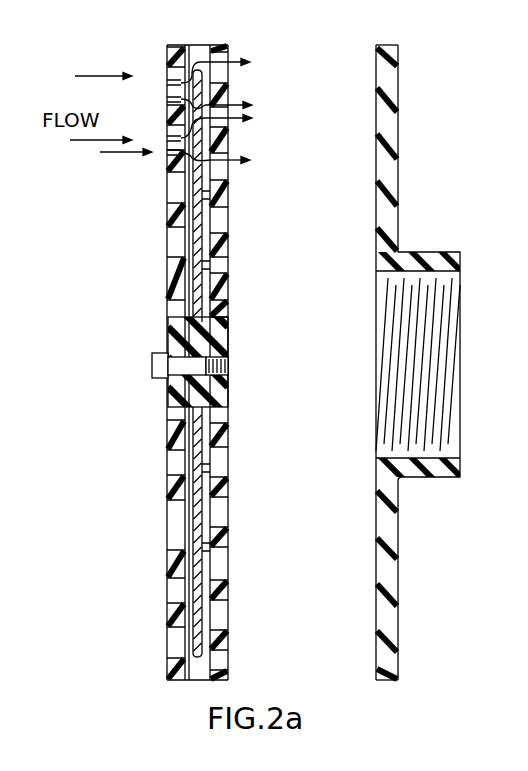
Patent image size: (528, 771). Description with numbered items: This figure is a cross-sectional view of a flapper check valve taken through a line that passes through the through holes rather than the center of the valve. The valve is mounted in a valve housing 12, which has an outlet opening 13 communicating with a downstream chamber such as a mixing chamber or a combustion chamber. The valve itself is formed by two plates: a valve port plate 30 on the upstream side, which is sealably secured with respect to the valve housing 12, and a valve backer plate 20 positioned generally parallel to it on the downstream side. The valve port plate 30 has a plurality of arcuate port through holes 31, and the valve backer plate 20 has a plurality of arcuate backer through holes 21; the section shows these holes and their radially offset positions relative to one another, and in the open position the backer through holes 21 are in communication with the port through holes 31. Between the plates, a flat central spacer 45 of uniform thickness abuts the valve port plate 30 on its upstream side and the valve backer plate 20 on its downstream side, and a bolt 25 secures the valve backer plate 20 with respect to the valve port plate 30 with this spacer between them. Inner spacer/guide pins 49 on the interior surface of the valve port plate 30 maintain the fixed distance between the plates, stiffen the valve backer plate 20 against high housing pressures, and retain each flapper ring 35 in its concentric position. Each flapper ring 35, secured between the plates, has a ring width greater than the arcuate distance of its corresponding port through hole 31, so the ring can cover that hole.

The valve housing 12 is at (385, 625).
The outlet opening 13 is at (440, 285).
The valve backer plate 20 is at (222, 418).
The backer through holes 21 is at (222, 220).
The bolt 25 is at (185, 365).
The valve port plate 30 is at (172, 284).
The port through holes 31 is at (172, 194).
The flapper ring 35 is at (200, 143).
The central spacer 45 is at (198, 342).
The inner spacer/guide pins 49 is at (203, 195).